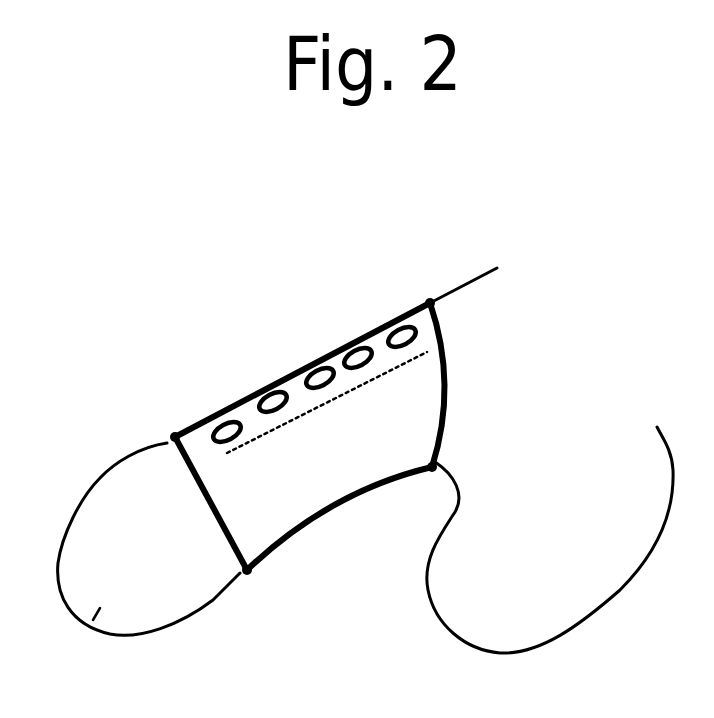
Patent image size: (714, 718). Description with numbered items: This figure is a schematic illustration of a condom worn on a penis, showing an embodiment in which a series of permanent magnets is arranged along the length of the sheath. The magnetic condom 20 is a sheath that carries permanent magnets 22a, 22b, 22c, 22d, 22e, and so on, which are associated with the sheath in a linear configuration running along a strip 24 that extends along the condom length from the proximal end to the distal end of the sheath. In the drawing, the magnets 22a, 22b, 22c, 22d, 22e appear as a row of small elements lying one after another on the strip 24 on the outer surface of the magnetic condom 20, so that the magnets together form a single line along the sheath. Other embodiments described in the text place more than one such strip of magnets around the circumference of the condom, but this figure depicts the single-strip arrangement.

The magnetic condom 20 is at (282, 513).
The permanent magnet 22a is at (418, 320).
The permanent magnet 22b is at (358, 348).
The permanent magnet 22c is at (313, 362).
The permanent magnet 22d is at (262, 390).
The permanent magnet 22e is at (233, 415).
The strip 24 is at (173, 433).